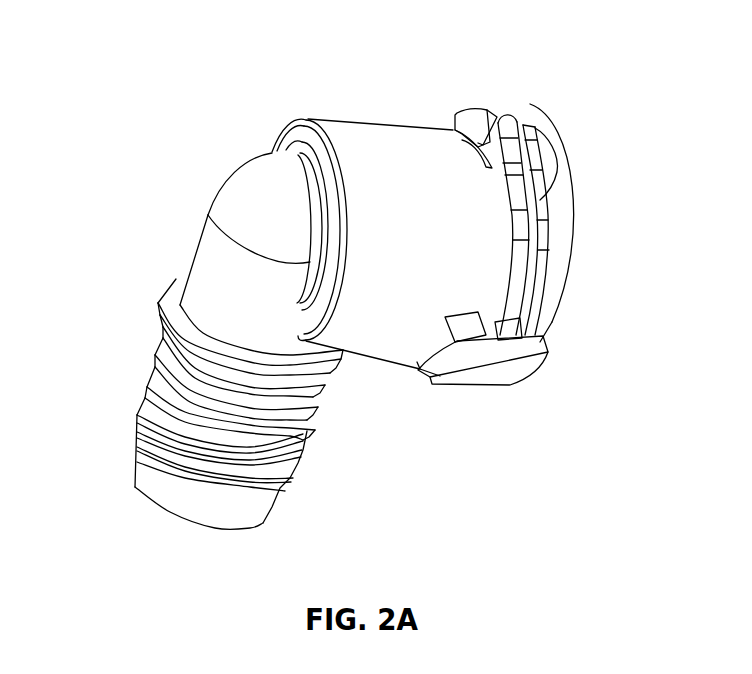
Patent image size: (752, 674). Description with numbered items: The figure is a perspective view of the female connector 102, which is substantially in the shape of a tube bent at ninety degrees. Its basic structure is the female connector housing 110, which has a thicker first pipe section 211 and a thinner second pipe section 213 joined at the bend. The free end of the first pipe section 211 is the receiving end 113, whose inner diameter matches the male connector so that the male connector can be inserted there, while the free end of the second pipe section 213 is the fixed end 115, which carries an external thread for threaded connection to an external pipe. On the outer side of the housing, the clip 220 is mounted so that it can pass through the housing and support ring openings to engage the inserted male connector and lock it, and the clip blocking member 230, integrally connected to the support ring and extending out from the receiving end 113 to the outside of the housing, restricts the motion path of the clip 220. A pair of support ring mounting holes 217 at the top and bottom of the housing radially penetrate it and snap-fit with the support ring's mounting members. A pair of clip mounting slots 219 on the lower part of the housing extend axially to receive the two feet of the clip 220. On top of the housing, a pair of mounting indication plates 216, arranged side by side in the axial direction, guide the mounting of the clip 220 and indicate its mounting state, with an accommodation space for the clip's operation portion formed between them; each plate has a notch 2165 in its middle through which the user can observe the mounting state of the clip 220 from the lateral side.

The female connector 102 is at (148, 164).
The female connector housing 110 is at (377, 340).
The receiving end 113 is at (548, 160).
The fixed end 115 is at (236, 533).
The first pipe section 211 is at (308, 120).
The second pipe section 213 is at (302, 398).
The mounting indication plates 216 is at (502, 110).
The notch 2165 is at (522, 126).
The support ring mounting holes 217 is at (458, 114).
The clip mounting slots 219 is at (477, 322).
The clip 220 is at (550, 190).
The clip blocking member 230 is at (517, 367).